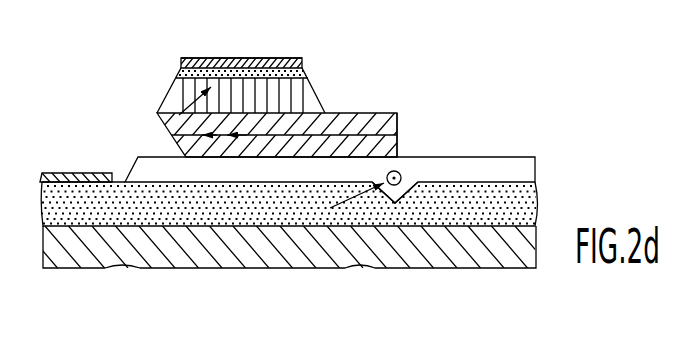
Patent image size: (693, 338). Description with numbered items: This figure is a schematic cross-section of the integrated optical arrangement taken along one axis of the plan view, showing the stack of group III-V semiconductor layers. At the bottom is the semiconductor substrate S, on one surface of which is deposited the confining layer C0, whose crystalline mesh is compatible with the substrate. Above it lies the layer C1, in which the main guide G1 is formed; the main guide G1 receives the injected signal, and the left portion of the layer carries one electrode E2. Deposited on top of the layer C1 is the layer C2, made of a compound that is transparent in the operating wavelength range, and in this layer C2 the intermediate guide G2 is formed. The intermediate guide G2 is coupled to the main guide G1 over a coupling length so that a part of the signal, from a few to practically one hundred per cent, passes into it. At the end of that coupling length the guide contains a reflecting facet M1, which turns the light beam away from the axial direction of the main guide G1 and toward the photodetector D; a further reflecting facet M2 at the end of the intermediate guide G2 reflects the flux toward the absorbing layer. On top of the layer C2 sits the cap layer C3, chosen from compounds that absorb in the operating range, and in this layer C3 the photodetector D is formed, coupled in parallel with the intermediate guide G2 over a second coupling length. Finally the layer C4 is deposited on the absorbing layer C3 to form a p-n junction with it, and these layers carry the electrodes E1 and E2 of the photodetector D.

The semiconductor substrate S is at (518, 243).
The confining layer C0 is at (522, 199).
The layer C1 is at (482, 168).
The main guide G1 is at (402, 173).
The electrode E2 is at (87, 168).
The layer C2 is at (333, 122).
The intermediate guide G2 is at (377, 133).
The reflecting facet M2 is at (165, 135).
The reflecting facet M1 is at (400, 130).
The cap layer C3 is at (182, 72).
The photodetector D is at (220, 57).
The layer C4 is at (192, 57).
The electrode E1 is at (268, 57).